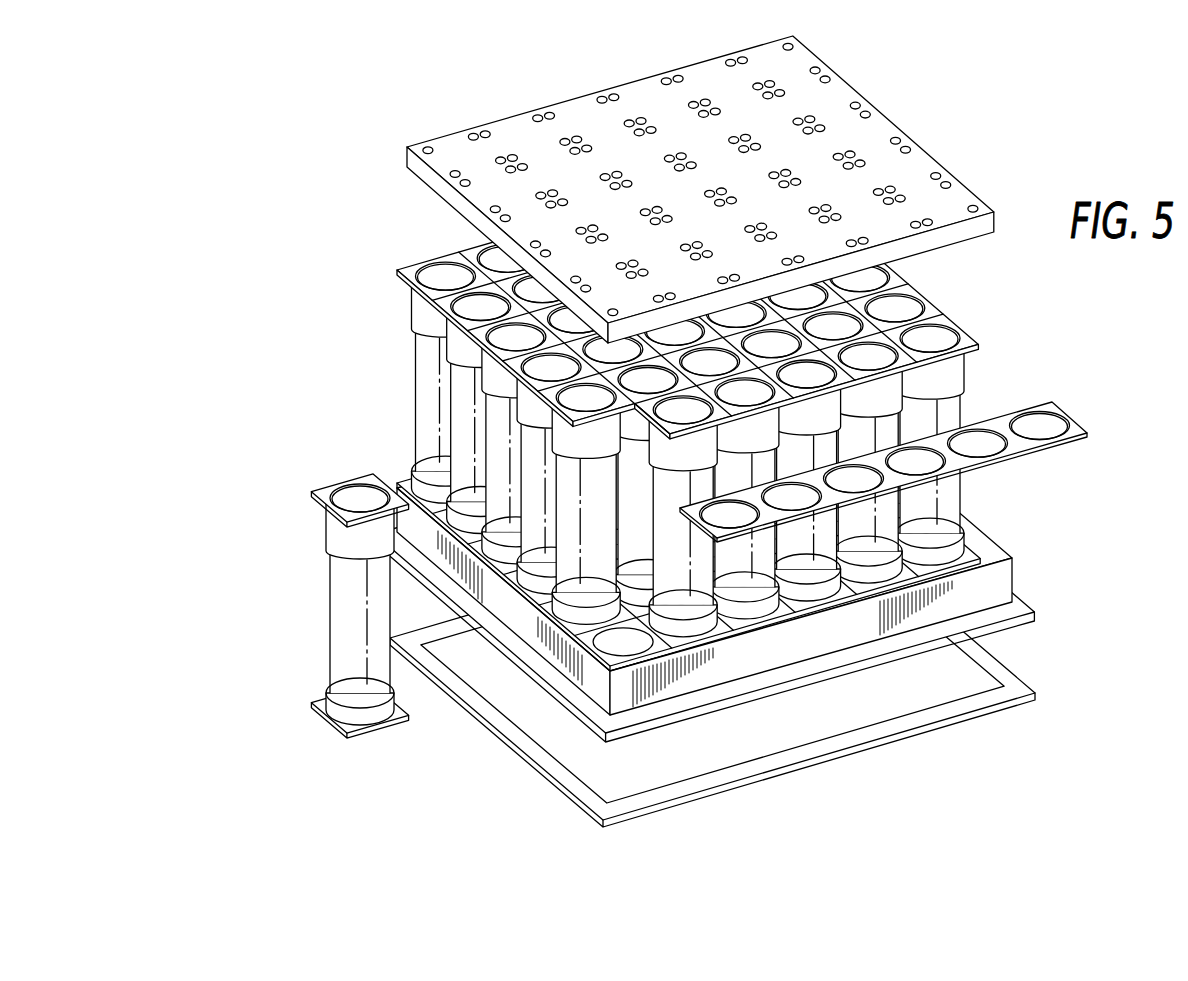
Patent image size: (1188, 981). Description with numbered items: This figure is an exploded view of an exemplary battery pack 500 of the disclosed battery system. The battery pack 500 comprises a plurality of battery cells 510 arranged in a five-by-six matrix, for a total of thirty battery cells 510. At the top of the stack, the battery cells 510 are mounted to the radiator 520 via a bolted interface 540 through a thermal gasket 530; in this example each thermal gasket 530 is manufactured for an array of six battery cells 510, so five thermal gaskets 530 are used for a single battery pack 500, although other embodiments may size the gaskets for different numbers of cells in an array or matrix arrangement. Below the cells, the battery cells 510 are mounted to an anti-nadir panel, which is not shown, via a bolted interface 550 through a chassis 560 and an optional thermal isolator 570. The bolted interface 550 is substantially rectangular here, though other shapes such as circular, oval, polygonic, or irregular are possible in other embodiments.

The battery pack 500 is at (342, 352).
The battery cell 510 is at (291, 477).
The radiator 520 is at (925, 166).
The thermal gasket 530 is at (1064, 413).
The bolted interface 540 is at (354, 493).
The bolted interface 550 is at (369, 741).
The chassis 560 is at (1016, 609).
The thermal isolator 570 is at (1010, 693).